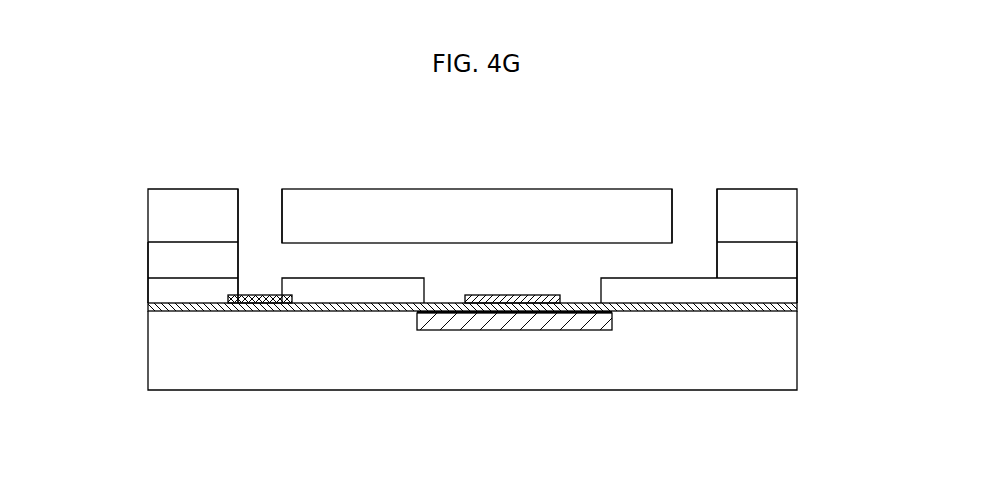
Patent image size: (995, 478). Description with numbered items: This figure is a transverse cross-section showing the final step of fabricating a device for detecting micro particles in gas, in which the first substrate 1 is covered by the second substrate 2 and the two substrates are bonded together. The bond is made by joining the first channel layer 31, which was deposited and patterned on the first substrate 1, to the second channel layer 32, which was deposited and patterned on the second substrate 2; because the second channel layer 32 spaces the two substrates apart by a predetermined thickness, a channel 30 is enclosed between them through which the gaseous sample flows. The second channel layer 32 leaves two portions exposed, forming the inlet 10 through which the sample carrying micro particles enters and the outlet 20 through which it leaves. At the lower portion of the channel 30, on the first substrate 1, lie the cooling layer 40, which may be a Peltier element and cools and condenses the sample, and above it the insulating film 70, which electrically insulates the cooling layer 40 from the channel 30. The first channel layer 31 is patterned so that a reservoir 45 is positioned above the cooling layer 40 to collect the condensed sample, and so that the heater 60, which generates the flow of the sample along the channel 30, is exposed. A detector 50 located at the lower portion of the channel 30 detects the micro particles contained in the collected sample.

The first substrate 1 is at (778, 351).
The second substrate 2 is at (198, 195).
The inlet 10 is at (695, 207).
The outlet 20 is at (261, 207).
The channel 30 is at (353, 263).
The first channel layer 31 is at (167, 293).
The second channel layer 32 is at (168, 261).
The cooling layer 40 is at (555, 330).
The reservoir 45 is at (513, 262).
The detector 50 is at (503, 303).
The heater 60 is at (263, 303).
The insulating film 70 is at (783, 308).